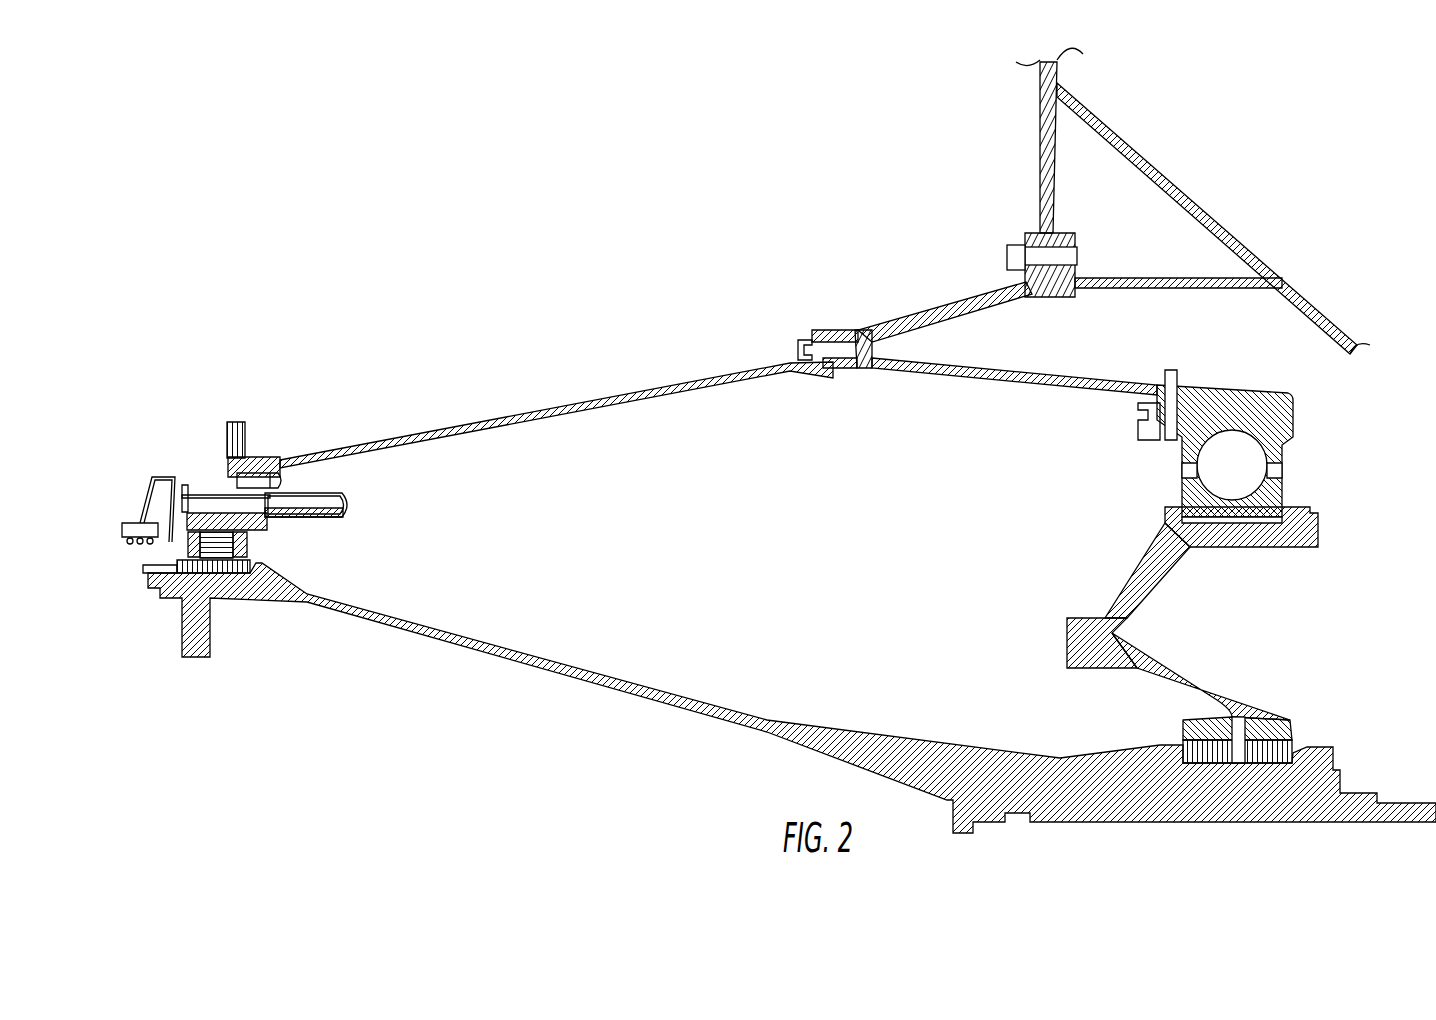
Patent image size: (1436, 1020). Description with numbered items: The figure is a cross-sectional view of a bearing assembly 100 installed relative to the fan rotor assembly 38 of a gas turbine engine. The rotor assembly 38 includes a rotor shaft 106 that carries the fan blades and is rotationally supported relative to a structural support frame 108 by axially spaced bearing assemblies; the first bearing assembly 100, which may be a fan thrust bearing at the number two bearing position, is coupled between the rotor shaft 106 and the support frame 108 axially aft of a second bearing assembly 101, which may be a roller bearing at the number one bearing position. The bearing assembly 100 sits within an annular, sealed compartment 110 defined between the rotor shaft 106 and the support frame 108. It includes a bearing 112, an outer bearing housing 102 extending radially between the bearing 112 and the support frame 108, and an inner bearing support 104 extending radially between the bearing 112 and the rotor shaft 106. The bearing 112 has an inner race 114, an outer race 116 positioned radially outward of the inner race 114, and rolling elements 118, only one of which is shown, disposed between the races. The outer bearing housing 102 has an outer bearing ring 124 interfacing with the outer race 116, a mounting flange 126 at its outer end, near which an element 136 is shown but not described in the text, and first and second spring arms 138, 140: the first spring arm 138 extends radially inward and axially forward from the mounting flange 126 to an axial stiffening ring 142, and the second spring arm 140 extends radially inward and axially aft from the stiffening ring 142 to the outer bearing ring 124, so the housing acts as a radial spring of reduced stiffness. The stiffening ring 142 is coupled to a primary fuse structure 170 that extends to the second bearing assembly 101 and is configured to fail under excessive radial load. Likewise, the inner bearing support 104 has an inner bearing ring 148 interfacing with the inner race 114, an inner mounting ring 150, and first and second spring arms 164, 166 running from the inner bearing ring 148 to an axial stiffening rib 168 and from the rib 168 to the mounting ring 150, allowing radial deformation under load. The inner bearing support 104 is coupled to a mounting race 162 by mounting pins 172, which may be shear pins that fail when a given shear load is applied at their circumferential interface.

The fan rotor assembly 38 is at (493, 718).
The bearing assembly 100 is at (1004, 527).
The second bearing assembly 101 is at (390, 515).
The outer bearing housing 102 is at (879, 332).
The inner bearing support 104 is at (1153, 630).
The rotor shaft 106 is at (638, 693).
The structural support frame 108 is at (1042, 163).
The sealed compartment 110 is at (680, 561).
The bearing 112 is at (1292, 471).
The inner race 114 is at (1247, 525).
The outer race 116 is at (1282, 441).
The rolling elements 118 is at (1213, 470).
The outer bearing ring 124 is at (1232, 393).
The mounting flange 126 is at (1030, 238).
The fastener 136 is at (1083, 257).
The first spring arm 138 is at (965, 312).
The second spring arm 140 is at (1003, 380).
The axial stiffening ring 142 is at (845, 328).
The inner bearing ring 148 is at (1214, 532).
The inner mounting ring 150 is at (1271, 720).
The mounting race 162 is at (1204, 754).
The first spring arm 164 is at (1142, 581).
The second spring arm 166 is at (1170, 678).
The axial stiffening rib 168 is at (1080, 642).
The primary fuse structure 170 is at (568, 410).
The mounting pins 172 is at (1241, 746).